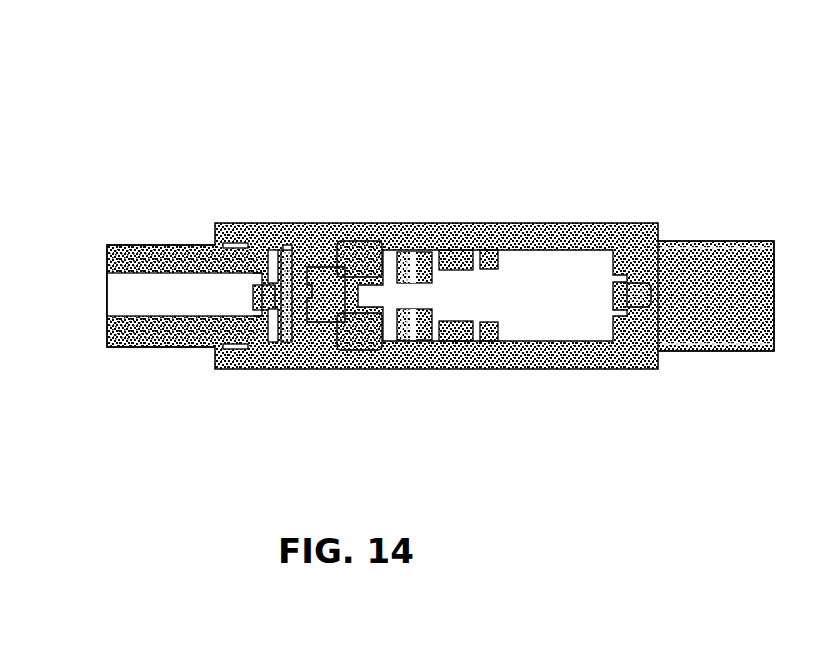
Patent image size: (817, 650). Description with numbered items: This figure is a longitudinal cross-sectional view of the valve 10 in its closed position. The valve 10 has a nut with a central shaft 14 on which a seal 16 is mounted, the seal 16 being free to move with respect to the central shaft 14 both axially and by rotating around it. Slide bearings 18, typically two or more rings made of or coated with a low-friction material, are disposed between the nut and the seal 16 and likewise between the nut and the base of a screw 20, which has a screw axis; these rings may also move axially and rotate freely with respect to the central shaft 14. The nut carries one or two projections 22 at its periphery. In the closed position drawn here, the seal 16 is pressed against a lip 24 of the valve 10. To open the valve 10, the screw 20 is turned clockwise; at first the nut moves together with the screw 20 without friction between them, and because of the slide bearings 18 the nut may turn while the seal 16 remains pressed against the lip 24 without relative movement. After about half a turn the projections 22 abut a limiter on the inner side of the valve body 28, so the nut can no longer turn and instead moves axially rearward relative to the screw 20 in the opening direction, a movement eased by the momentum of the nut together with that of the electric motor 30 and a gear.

The valve 10 is at (460, 115).
The central shaft 14 is at (253, 297).
The seal 16 is at (275, 265).
The slide bearings 18 is at (291, 255).
The screw 20 is at (403, 282).
The projections 22 is at (357, 243).
The lip 24 is at (268, 270).
The valve body 28 is at (737, 250).
The electric motor 30 is at (600, 271).